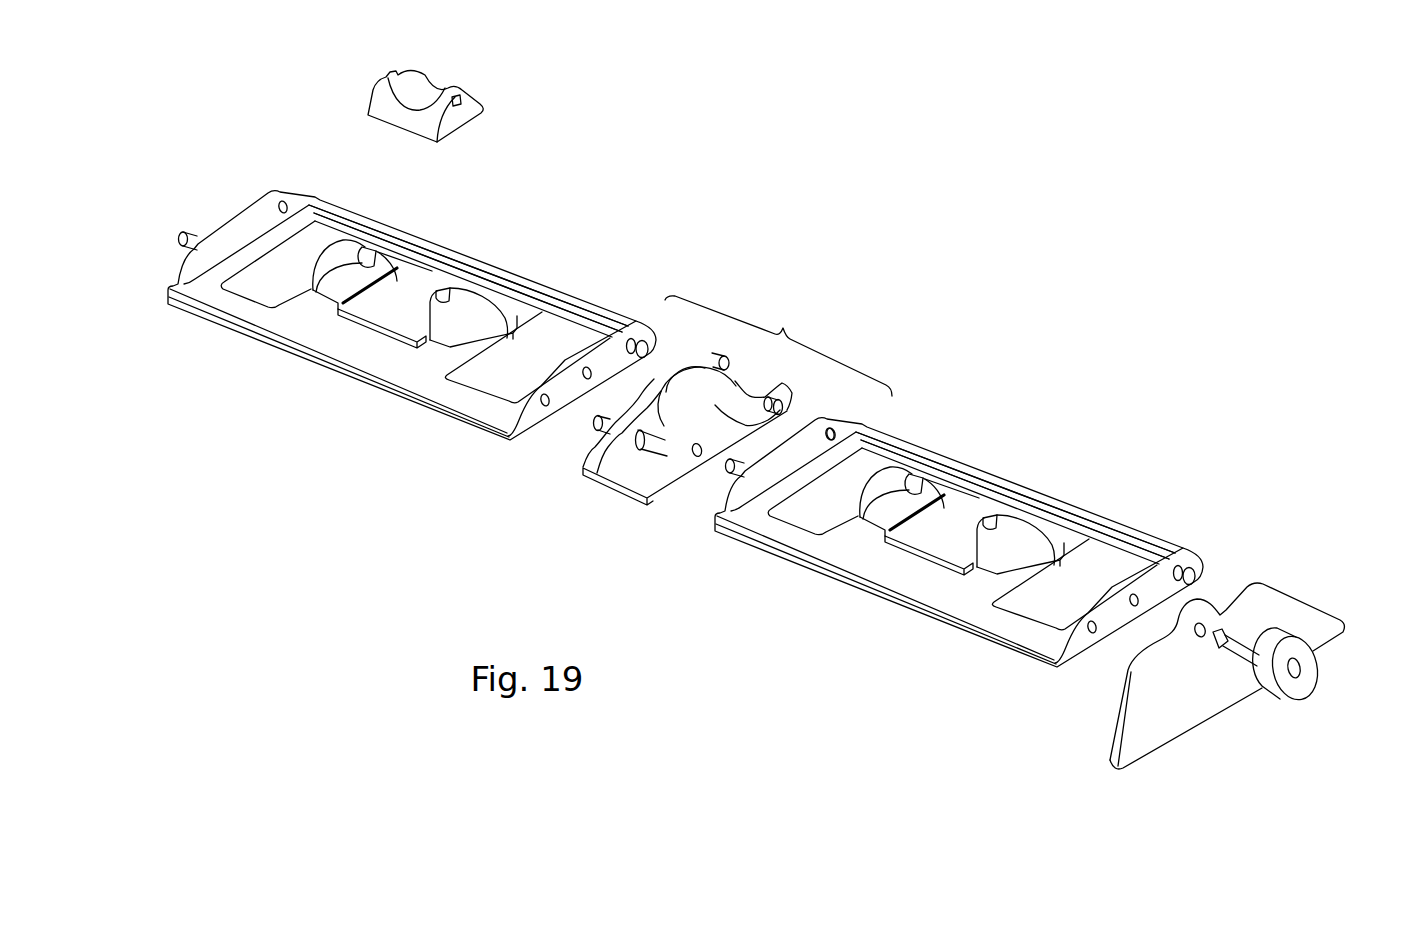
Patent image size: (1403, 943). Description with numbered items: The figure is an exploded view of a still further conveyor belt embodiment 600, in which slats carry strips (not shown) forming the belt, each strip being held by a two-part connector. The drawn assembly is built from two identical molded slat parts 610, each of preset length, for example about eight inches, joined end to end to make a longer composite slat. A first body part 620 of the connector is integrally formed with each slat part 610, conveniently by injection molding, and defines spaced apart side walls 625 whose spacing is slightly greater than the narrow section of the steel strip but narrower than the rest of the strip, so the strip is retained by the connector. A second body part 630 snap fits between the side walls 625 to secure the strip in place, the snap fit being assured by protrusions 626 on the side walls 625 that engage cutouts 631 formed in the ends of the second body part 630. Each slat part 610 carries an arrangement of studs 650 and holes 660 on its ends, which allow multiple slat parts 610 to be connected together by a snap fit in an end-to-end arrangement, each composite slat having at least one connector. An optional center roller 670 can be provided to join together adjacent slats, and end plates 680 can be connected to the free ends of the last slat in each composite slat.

The conveyor belt embodiment 600 is at (785, 322).
The slat part 610 is at (490, 259).
The first body part of connector 620 is at (411, 230).
The side walls 625 is at (340, 304).
The protrusions 626 is at (357, 261).
The second body part of connector 630 is at (498, 112).
The cutouts 631 is at (458, 99).
The studs 650 is at (636, 320).
The holes 660 is at (545, 407).
The center roller 670 is at (620, 480).
The end plates 680 is at (1116, 740).